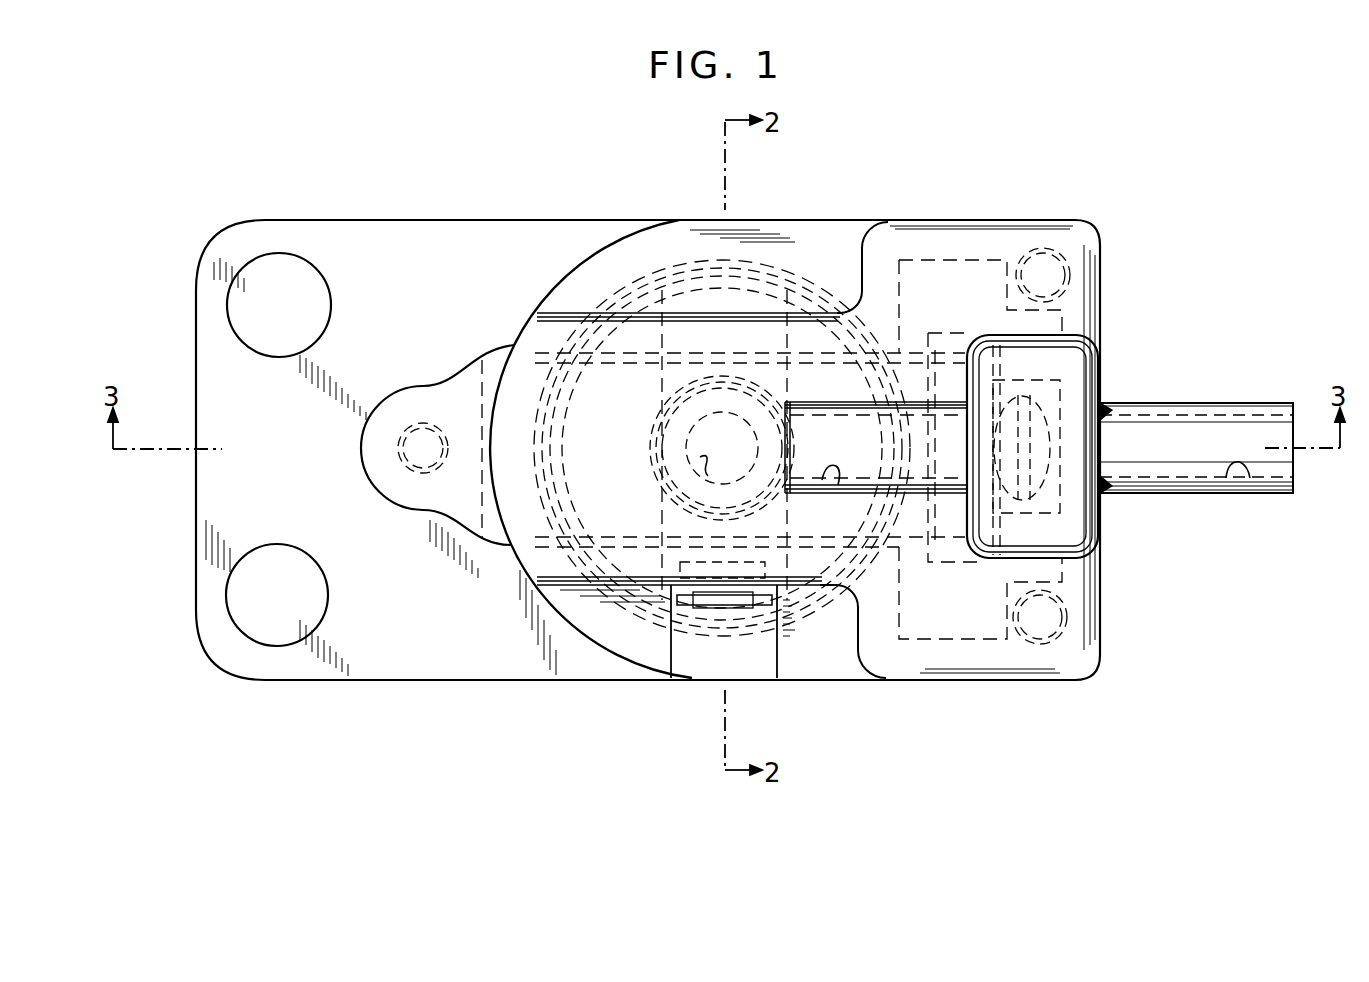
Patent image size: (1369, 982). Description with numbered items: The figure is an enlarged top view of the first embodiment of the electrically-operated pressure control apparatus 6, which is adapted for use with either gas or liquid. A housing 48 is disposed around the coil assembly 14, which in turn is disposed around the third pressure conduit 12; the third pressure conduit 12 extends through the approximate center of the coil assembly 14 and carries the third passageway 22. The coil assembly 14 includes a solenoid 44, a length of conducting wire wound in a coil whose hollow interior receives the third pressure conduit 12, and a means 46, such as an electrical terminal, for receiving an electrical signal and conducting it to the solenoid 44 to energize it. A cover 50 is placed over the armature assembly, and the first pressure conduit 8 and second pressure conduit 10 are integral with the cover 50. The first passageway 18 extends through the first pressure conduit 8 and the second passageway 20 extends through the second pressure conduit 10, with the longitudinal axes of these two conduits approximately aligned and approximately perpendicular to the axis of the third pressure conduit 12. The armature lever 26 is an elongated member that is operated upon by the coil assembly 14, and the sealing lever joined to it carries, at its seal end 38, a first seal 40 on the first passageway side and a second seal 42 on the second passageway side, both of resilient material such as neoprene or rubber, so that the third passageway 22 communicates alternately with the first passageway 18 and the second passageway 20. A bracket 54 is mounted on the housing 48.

The pressure control apparatus 6 is at (530, 716).
The first pressure conduit 8 is at (1194, 484).
The second pressure conduit 10 is at (845, 404).
The third pressure conduit 12 is at (678, 448).
The coil assembly 14 is at (850, 690).
The first passageway 18 is at (1248, 480).
The second passageway 20 is at (828, 486).
The third passageway 22 is at (700, 458).
The armature lever 26 is at (740, 365).
The seal end 38 is at (1030, 408).
The first seal 40 is at (1042, 495).
The second seal 42 is at (1002, 420).
The solenoid 44 is at (600, 424).
The means for receiving an electrical signal 46 is at (712, 600).
The housing 48 is at (608, 303).
The cover 50 is at (458, 388).
The bracket 54 is at (370, 221).